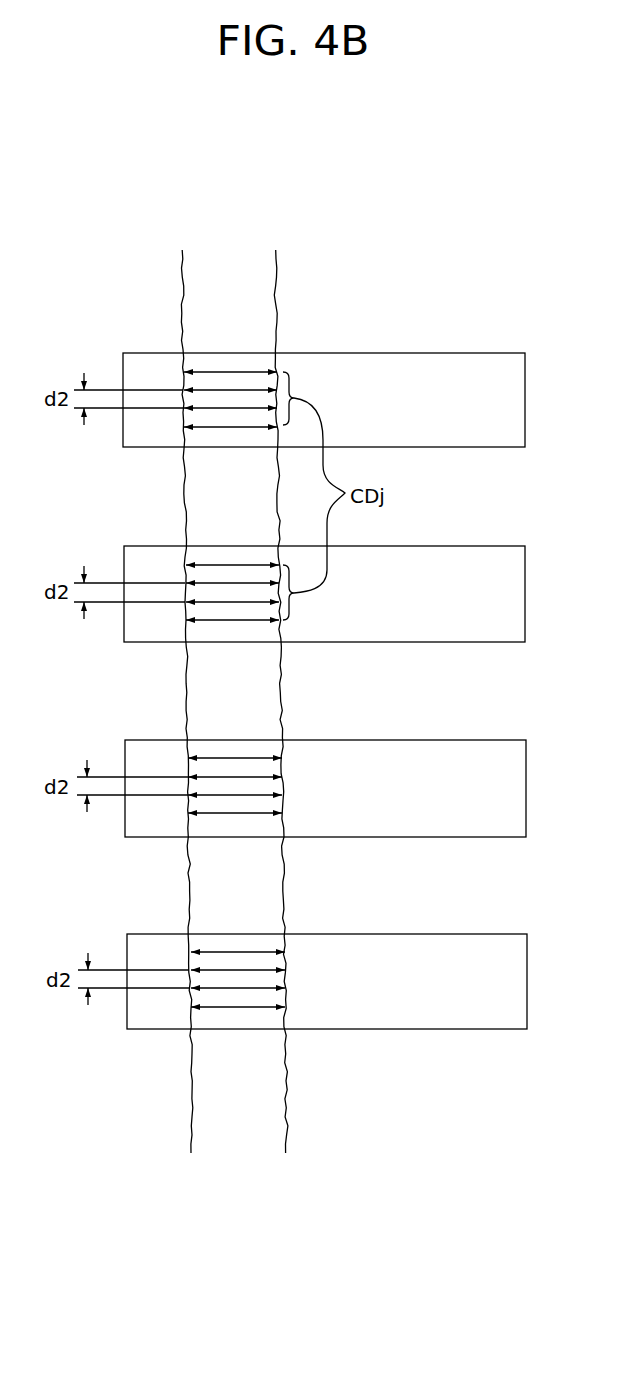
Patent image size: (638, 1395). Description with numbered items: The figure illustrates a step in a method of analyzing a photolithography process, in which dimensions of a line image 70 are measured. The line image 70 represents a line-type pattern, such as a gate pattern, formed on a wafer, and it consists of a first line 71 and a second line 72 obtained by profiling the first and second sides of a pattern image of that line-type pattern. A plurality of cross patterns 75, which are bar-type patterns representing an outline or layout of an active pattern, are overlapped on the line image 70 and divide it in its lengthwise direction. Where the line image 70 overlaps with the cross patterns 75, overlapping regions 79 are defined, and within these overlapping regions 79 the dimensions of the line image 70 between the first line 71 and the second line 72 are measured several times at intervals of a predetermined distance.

The line image 70 is at (218, 232).
The first line 71 is at (192, 1165).
The second line 72 is at (286, 1165).
The cross patterns 75 is at (465, 351).
The overlapping regions 79 is at (198, 362).